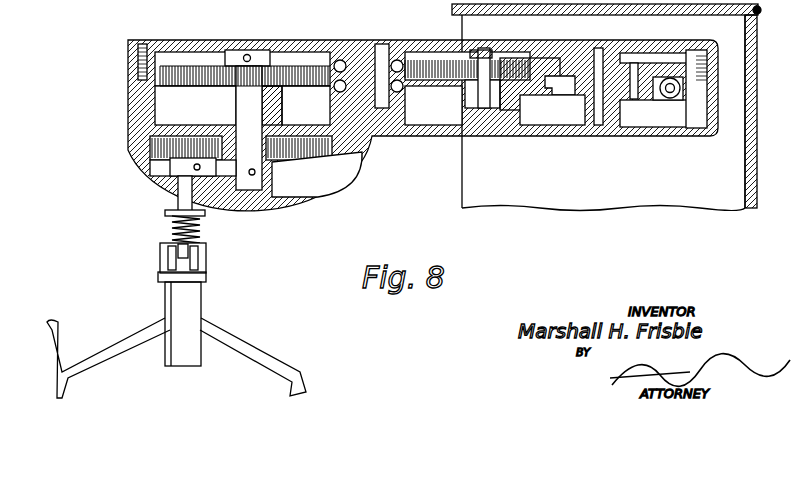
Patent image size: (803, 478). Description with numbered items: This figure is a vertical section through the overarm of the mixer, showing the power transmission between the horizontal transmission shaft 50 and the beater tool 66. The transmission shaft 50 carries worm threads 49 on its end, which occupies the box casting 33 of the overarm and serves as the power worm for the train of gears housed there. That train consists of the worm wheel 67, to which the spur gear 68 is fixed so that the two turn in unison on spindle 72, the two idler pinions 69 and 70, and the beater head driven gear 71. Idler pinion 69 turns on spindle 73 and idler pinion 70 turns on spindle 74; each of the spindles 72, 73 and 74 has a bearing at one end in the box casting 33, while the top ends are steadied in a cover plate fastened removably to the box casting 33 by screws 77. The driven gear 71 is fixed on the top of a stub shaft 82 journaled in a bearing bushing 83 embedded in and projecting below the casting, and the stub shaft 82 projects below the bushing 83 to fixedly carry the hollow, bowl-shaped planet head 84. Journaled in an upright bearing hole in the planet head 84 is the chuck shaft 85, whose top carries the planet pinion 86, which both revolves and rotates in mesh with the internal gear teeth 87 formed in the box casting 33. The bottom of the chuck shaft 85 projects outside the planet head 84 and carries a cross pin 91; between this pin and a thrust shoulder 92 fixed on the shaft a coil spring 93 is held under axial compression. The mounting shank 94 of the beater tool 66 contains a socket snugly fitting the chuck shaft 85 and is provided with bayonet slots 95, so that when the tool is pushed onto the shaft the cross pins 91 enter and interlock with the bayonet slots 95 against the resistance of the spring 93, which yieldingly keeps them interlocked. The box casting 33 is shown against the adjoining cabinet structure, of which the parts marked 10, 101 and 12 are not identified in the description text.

The supporting plate 10 is at (752, 88).
The plate wall 101 is at (738, 60).
The pivot pin 12 is at (762, 10).
The box casting 33 is at (712, 118).
The worm threads 49 is at (668, 98).
The horizontal transmission shaft 50 is at (671, 79).
The beater tool 66 is at (254, 362).
The worm wheel 67 is at (556, 98).
The spur gear 68 is at (540, 62).
The idler pinion 69 is at (545, 80).
The idler pinion 70 is at (424, 92).
The beater head driven gear 71 is at (308, 95).
The spindle 72 is at (599, 48).
The spindle 73 is at (484, 50).
The spindle 74 is at (382, 44).
The screws 77 is at (143, 42).
The stub shaft 82 is at (247, 48).
The bearing bushing 83 is at (262, 96).
The planet head 84 is at (332, 190).
The chuck shaft 85 is at (178, 192).
The planet pinion 86 is at (158, 150).
The internal gear teeth 87 is at (330, 148).
The cross pin 91 is at (200, 258).
The thrust shoulder 92 is at (165, 208).
The coil spring 93 is at (178, 230).
The mounting shank 94 is at (166, 277).
The bayonet slots 95 is at (178, 256).